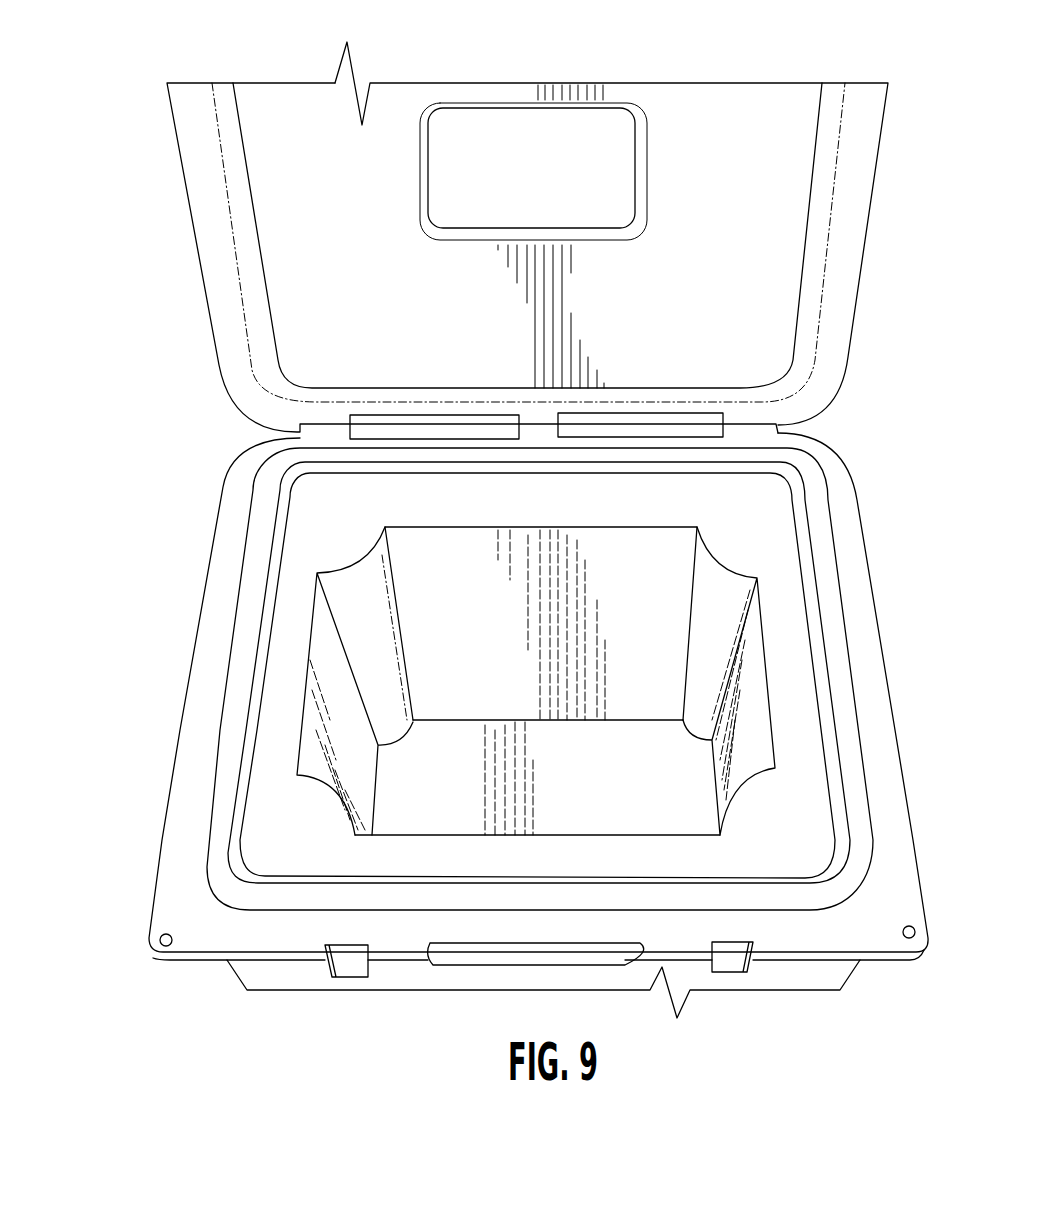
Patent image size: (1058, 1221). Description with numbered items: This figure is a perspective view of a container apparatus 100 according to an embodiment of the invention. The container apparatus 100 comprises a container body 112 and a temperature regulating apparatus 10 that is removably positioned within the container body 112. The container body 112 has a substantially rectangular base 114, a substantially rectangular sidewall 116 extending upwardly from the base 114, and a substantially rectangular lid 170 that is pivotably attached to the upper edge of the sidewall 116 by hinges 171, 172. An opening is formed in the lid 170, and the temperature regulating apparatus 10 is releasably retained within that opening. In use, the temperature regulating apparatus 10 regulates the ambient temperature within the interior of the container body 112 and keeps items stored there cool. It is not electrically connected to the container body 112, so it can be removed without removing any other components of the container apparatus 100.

The container apparatus 100 is at (105, 167).
The temperature regulating apparatus 10 is at (491, 127).
The lid 170 is at (872, 268).
The hinge 171 is at (613, 427).
The hinge 172 is at (380, 430).
The container body 112 is at (907, 732).
The base 114 is at (617, 757).
The sidewall 116 is at (755, 697).